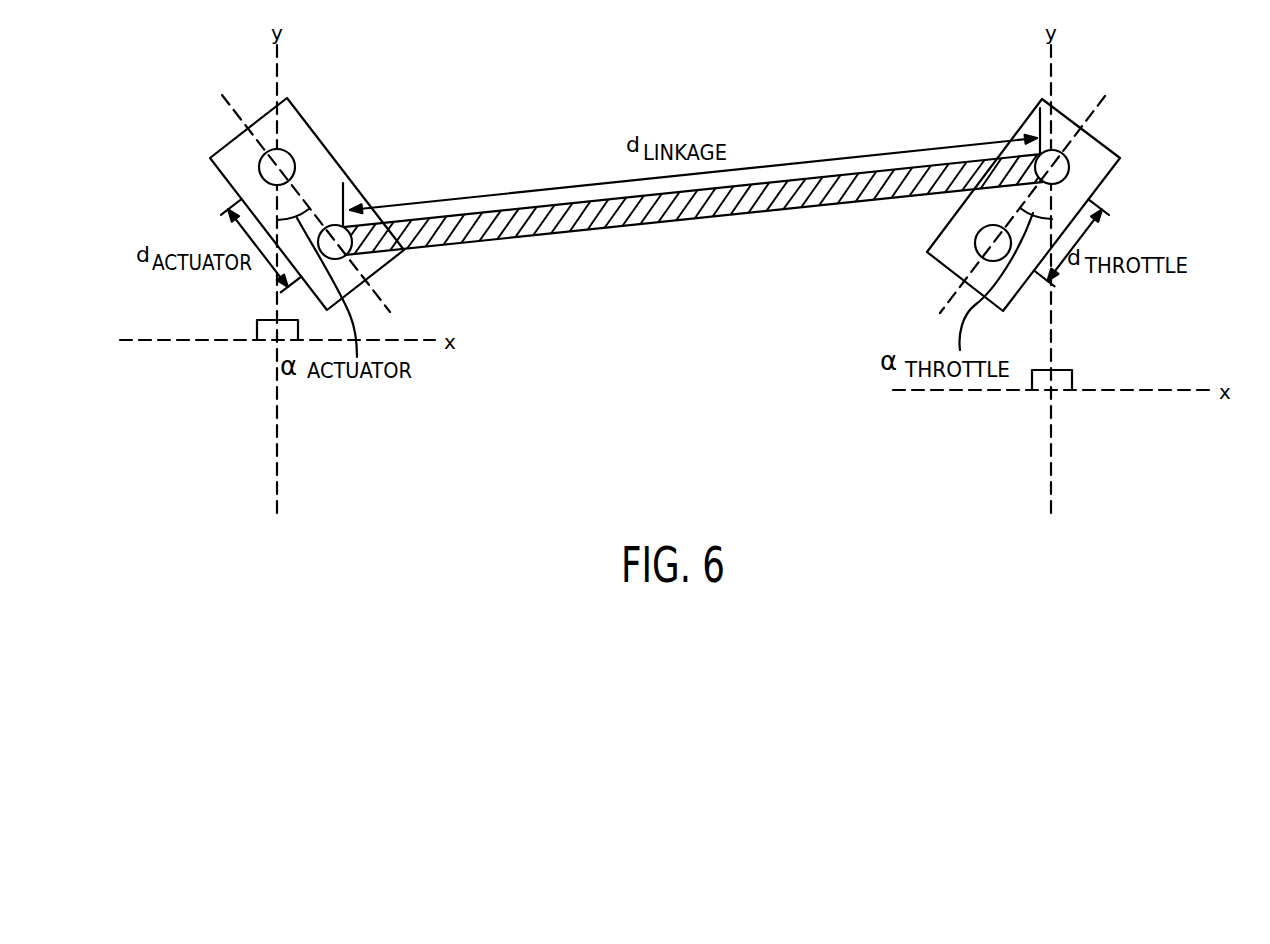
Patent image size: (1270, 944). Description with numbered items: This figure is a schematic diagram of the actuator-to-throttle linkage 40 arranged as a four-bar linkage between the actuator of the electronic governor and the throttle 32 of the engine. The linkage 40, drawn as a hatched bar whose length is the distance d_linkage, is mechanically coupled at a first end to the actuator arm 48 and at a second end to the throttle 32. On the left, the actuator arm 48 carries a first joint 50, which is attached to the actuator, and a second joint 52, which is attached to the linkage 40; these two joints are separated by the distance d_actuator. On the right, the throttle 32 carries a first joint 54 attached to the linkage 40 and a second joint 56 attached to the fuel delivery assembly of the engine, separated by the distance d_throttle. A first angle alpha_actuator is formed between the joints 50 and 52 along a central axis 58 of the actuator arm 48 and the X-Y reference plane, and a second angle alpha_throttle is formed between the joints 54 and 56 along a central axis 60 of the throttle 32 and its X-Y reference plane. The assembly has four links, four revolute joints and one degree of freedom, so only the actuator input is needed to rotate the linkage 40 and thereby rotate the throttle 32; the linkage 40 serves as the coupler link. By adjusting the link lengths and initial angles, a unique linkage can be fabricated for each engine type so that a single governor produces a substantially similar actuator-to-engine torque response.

The throttle 32 is at (1100, 145).
The actuator-to-throttle linkage 40 is at (686, 221).
The actuator arm 48 is at (230, 141).
The first joint of the actuator arm 50 is at (289, 153).
The second joint of the actuator arm 52 is at (333, 225).
The first joint of the throttle 54 is at (1069, 166).
The second joint of the throttle 56 is at (976, 247).
The central axis of the actuator arm 58 is at (376, 293).
The central axis of the throttle 60 is at (1094, 106).